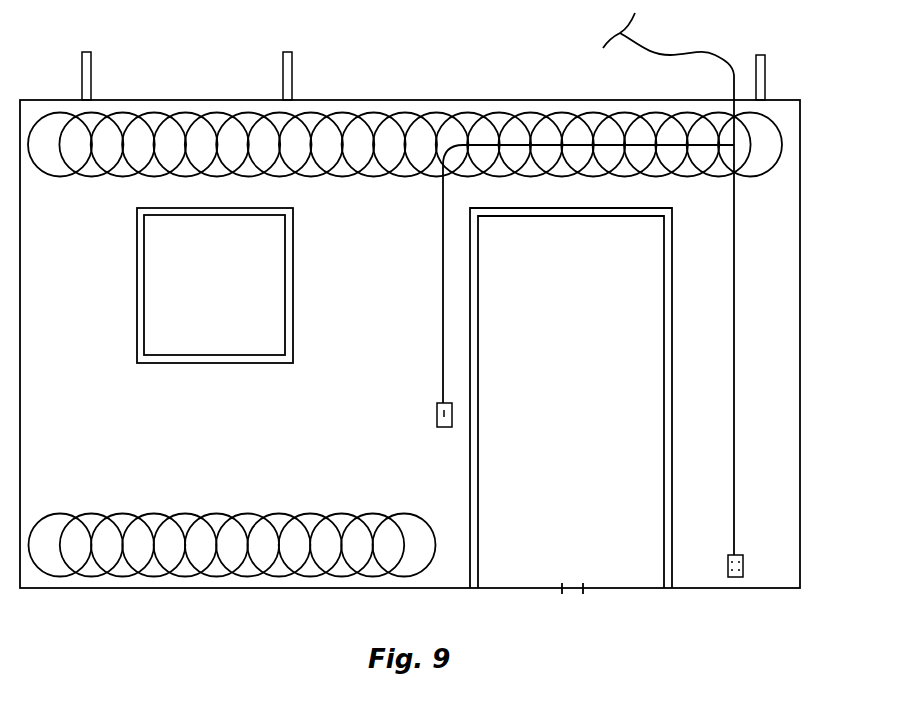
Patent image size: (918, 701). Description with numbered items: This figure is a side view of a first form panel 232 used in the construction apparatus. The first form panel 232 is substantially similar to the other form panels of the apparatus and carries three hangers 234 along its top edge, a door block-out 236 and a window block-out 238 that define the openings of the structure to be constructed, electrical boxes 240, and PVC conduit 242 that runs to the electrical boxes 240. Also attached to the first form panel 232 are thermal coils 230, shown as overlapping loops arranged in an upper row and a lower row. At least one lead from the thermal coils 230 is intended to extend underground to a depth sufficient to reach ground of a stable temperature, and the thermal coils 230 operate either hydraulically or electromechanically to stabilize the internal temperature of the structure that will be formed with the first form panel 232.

The thermal coils 230 is at (60, 177).
The first form panel 232 is at (802, 256).
The hangers 234 is at (282, 77).
The door block-out 236 is at (665, 416).
The window block-out 238 is at (283, 247).
The electrical boxes 240 is at (435, 412).
The PVC conduit 242 is at (441, 261).